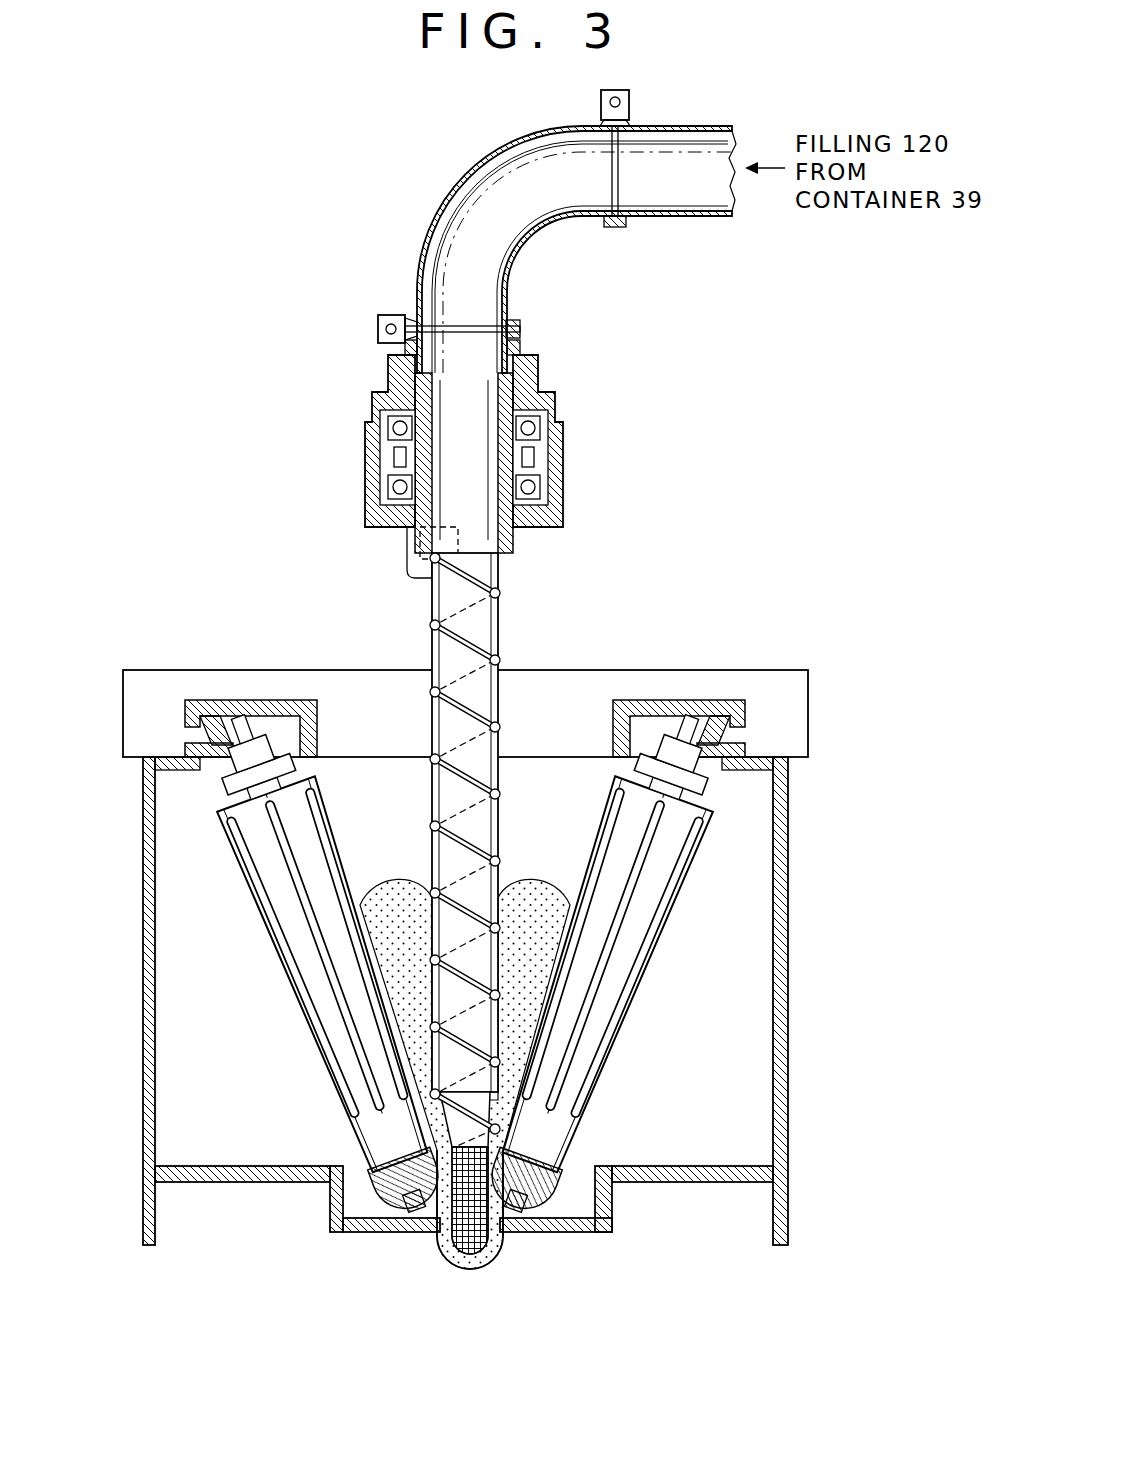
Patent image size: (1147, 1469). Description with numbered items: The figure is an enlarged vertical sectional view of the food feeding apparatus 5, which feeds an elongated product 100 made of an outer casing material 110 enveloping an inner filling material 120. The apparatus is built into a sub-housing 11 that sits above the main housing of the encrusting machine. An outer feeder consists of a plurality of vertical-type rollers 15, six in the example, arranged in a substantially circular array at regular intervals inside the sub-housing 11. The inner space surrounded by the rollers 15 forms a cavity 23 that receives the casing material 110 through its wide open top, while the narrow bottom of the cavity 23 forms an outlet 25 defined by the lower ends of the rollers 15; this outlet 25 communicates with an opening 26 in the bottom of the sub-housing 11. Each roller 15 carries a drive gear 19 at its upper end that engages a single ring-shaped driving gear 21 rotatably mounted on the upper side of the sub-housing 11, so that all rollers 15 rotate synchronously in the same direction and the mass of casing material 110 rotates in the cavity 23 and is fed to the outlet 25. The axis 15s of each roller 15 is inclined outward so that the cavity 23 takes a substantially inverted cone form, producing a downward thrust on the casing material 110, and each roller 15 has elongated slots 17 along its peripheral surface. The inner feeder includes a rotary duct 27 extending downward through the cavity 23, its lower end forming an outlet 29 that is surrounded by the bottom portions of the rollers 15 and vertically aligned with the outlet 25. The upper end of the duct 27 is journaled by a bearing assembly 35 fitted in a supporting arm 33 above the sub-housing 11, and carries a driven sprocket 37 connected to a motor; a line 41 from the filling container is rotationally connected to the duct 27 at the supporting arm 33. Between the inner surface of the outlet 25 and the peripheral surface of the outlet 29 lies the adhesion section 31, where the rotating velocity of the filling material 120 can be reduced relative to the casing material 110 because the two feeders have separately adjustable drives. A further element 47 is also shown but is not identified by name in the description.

The food feeding apparatus 5 is at (426, 444).
The sub-housing 11 is at (790, 905).
The vertical-type rollers 15 is at (278, 963).
The roller axis 15s is at (255, 725).
The elongated slots 17 is at (326, 975).
The drive gear 19 is at (240, 790).
The ring-shaped driving gear 21 is at (296, 700).
The cavity 23 is at (465, 704).
The outlet 25 is at (522, 1235).
The opening 26 is at (418, 1236).
The rotary duct 27 is at (505, 885).
The outlet 29 is at (438, 1172).
The adhesion section 31 is at (392, 1210).
The supporting arm 33 is at (368, 516).
The bearing assembly 35 is at (548, 490).
The driven sprocket 37 is at (372, 462).
The line 41 is at (662, 222).
The screw conveyor 47 is at (440, 855).
The elongated product 100 is at (471, 1293).
The casing material 110 is at (395, 893).
The filling material 120 is at (496, 1262).